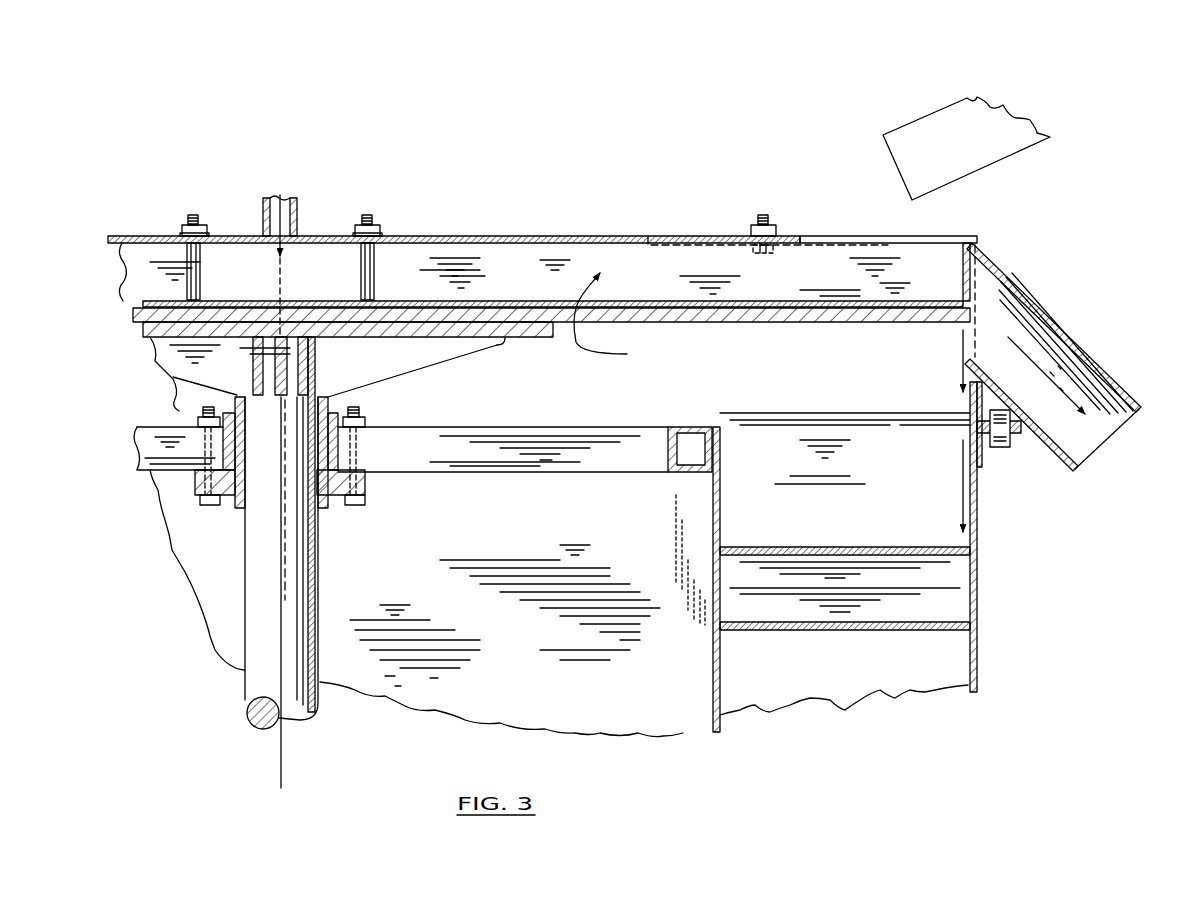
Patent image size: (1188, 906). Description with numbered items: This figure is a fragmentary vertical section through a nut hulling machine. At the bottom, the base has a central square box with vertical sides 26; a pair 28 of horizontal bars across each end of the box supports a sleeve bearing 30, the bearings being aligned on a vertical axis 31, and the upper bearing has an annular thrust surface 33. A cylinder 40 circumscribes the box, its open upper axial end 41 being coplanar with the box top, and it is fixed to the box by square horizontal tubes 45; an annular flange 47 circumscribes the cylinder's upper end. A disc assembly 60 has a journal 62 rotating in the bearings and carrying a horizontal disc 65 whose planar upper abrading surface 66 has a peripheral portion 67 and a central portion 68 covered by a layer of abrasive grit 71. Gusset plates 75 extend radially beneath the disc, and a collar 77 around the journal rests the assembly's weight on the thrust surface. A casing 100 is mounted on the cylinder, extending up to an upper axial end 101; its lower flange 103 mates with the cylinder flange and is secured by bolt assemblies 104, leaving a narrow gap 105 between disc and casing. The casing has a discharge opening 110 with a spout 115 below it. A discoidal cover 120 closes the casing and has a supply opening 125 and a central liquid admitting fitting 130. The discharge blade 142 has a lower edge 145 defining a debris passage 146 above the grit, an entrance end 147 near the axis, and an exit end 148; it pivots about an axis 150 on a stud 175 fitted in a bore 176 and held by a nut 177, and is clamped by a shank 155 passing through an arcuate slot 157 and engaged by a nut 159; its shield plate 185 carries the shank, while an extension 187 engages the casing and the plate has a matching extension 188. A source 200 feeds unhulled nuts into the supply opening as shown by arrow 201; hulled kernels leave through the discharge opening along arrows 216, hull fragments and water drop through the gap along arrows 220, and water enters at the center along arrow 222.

The vertical sides 26 is at (713, 668).
The pair of horizontal bars 28 is at (485, 445).
The sleeve bearing 30 is at (231, 505).
The vertical axis 31 is at (283, 767).
The thrust surface 33 is at (345, 468).
The cylinder 40 is at (977, 567).
The upper axial end 41 is at (974, 431).
The square horizontal tubes 45 is at (862, 546).
The annular flange 47 is at (1008, 447).
The disc assembly 60 is at (572, 350).
The journal 62 is at (292, 600).
The disc 65 is at (505, 338).
The upper abrading surface 66 is at (745, 300).
The peripheral portion 67 is at (852, 301).
The central portion 68 is at (308, 302).
The layer of abrasive grit 71 is at (687, 301).
The gusset plates 75 is at (165, 363).
The collar 77 is at (358, 437).
The casing 100 is at (974, 424).
The upper axial end 101 is at (974, 238).
The flange 103 is at (1032, 413).
The bolt assemblies 104 is at (993, 448).
The gap 105 is at (966, 320).
The discharge opening 110 is at (963, 274).
The spout 115 is at (1102, 367).
The cover 120 is at (556, 236).
The supply opening 125 is at (916, 239).
The liquid admitting fitting 130 is at (296, 198).
The discharge blade 142 is at (614, 317).
The lower edge 145 is at (793, 304).
The debris passage 146 is at (970, 300).
The entrance end 147 is at (188, 264).
The exit end 148 is at (723, 278).
The pivotal axis 150 is at (191, 218).
The screw-threaded shank 155 is at (763, 215).
The arcuate slot 157 is at (765, 254).
The nut 159 is at (722, 262).
The screw-threaded stud 175 is at (200, 276).
The bore 176 is at (190, 260).
The nut 177 is at (201, 224).
The shield plate 185 is at (653, 239).
The extension 187 is at (918, 280).
The extension 188 is at (845, 244).
The source 200 is at (932, 112).
The arrow 201 is at (860, 278).
The arrows 216 is at (1037, 360).
The arrows 220 is at (960, 364).
The arrow 222 is at (277, 222).